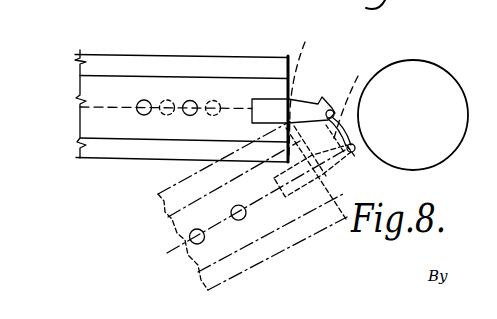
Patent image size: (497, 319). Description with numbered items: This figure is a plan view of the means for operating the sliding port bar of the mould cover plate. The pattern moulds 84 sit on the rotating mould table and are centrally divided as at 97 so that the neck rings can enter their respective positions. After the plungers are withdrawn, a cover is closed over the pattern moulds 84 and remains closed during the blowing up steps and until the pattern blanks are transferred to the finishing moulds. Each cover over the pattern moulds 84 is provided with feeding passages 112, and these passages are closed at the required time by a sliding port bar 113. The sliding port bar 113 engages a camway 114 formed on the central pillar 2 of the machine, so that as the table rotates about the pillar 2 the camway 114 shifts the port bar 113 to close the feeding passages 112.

The central pillar 2 is at (428, 108).
The pattern moulds 84 is at (171, 103).
The central division of the moulds 97 is at (108, 108).
The feeding passages 112 is at (188, 113).
The sliding port bar 113 is at (253, 101).
The camway 114 is at (346, 98).